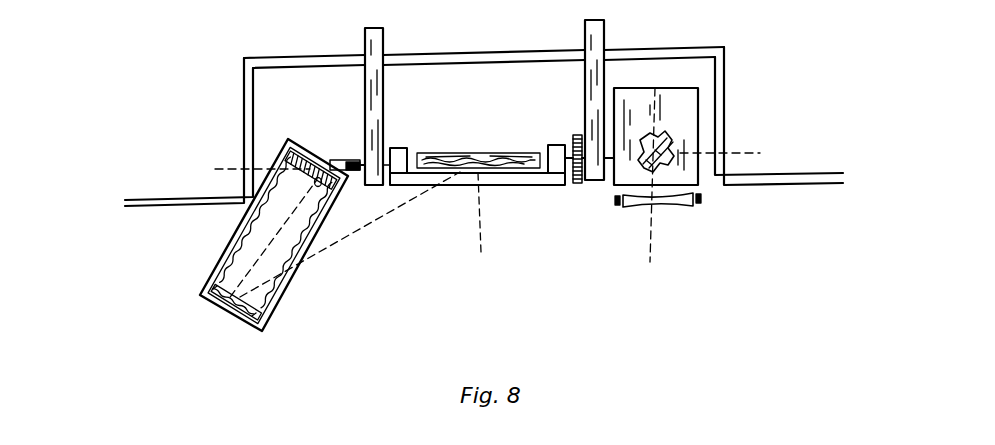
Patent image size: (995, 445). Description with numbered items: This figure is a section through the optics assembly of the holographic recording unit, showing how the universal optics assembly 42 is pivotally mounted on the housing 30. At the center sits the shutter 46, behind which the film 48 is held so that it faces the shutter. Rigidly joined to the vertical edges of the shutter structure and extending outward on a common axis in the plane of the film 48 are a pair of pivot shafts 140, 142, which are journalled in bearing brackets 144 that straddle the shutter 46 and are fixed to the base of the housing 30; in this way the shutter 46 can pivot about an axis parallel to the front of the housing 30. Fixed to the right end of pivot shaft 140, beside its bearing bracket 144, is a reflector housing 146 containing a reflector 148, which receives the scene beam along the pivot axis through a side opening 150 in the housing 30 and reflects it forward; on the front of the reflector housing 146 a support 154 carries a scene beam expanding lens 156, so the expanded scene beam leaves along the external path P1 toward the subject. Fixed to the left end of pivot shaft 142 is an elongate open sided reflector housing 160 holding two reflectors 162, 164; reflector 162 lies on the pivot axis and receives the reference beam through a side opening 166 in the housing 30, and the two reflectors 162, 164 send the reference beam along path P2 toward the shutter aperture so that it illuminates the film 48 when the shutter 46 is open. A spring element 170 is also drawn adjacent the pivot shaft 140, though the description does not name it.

The housing 30 is at (805, 184).
The universal optics assembly 42 is at (436, 219).
The shutter 46 is at (491, 184).
The film 48 is at (480, 166).
The pivot shaft 140 is at (580, 185).
The pivot shaft 142 is at (397, 148).
The bearing brackets 144 is at (365, 90).
The reflector housing 146 is at (655, 97).
The reflector 148 is at (660, 142).
The side opening 150 is at (725, 150).
The support 154 is at (702, 200).
The scene beam expanding lens 156 is at (684, 207).
The elongate open sided reflector housing 160 is at (233, 246).
The reflector 162 is at (330, 160).
The reflector 164 is at (257, 307).
The side opening 166 is at (245, 166).
The spring 170 is at (573, 136).
The external beam path P1 is at (650, 258).
The external path P2 is at (340, 243).